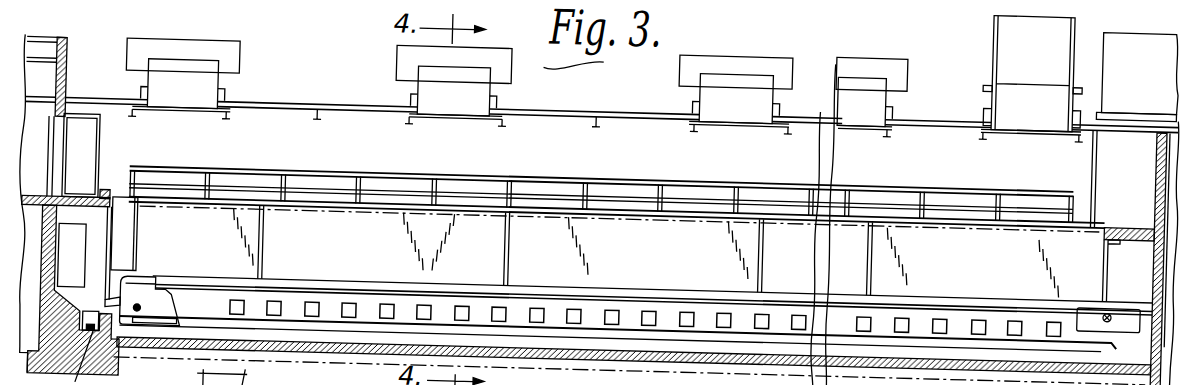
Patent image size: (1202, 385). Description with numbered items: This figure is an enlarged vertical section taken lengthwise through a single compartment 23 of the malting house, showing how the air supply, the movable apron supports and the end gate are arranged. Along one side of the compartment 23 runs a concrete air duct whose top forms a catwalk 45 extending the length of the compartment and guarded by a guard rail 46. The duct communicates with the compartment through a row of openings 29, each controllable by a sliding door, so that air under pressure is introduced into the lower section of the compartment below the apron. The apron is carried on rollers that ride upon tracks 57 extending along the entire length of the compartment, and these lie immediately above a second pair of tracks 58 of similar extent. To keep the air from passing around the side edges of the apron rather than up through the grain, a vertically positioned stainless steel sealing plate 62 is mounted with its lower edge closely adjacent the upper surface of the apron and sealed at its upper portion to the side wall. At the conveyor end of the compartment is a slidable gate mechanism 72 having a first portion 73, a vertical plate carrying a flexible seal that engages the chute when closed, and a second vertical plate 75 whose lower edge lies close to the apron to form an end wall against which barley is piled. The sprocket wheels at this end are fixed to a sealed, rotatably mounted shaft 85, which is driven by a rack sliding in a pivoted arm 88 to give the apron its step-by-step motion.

The compartment 23 is at (946, 160).
The openings 29 is at (980, 310).
The catwalk 45 is at (955, 213).
The guard rail 46 is at (637, 184).
The tracks 57 is at (635, 292).
The second pair of tracks 58 is at (700, 330).
The sealing plate 62 is at (532, 232).
The gate mechanism 72 is at (127, 230).
The first portion 73 is at (113, 277).
The vertical plate 75 is at (140, 253).
The shaft 85 is at (143, 319).
The arm 88 is at (688, 357).